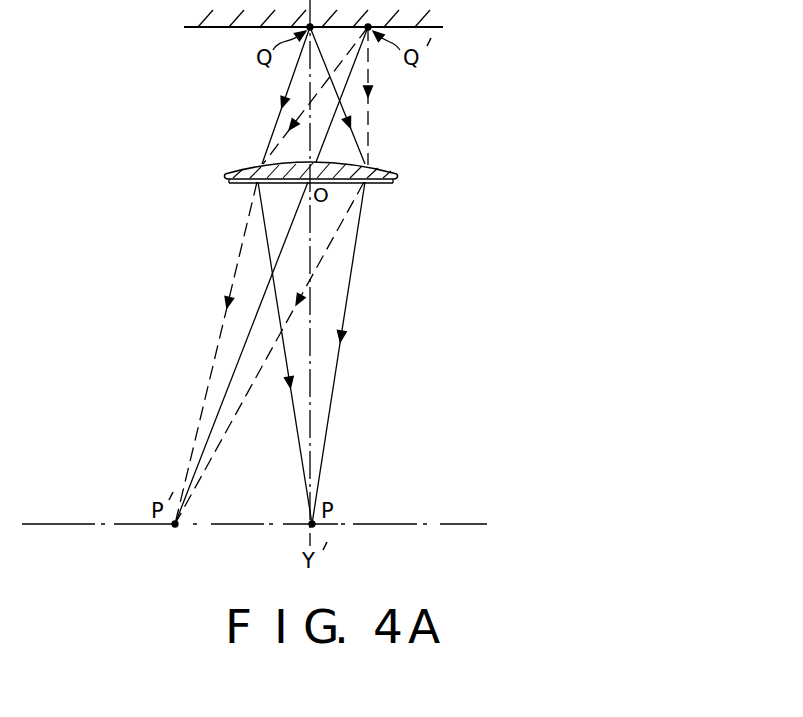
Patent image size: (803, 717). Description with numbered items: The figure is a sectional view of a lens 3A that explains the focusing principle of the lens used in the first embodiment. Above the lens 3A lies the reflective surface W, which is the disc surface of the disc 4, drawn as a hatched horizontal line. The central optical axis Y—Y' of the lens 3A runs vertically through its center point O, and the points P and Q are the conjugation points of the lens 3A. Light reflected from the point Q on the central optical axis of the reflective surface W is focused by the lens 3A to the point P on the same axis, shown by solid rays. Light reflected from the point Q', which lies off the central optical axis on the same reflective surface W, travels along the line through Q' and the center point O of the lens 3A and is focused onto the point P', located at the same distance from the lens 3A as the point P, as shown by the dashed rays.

The disc 4 is at (438, 15).
The lens 3A is at (397, 172).
The reflective surface W is at (208, 32).